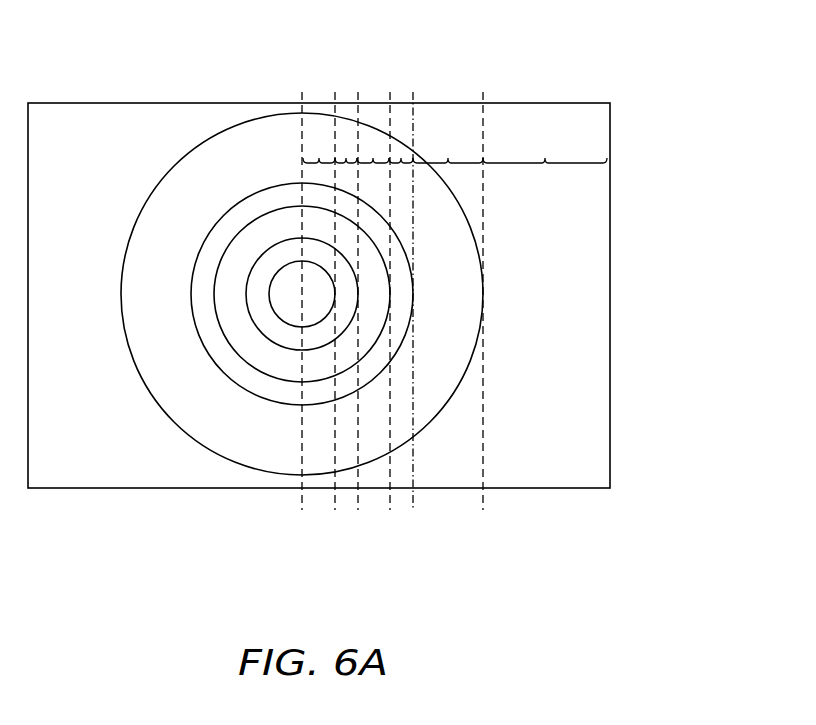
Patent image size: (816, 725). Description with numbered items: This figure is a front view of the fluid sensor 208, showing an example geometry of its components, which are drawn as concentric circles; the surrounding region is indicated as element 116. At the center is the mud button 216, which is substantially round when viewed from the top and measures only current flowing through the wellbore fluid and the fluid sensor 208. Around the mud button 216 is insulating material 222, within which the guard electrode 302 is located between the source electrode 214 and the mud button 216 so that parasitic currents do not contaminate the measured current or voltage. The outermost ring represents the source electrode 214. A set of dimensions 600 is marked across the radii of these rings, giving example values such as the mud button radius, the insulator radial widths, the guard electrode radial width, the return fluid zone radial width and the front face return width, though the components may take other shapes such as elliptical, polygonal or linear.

The substrate 116 is at (372, 251).
The fluid sensor 208 is at (184, 90).
The source electrode 214 is at (413, 403).
The mud button 216 is at (313, 305).
The insulating material 222 is at (345, 293).
The guard electrode 302 is at (362, 261).
The dimension 600 is at (607, 90).